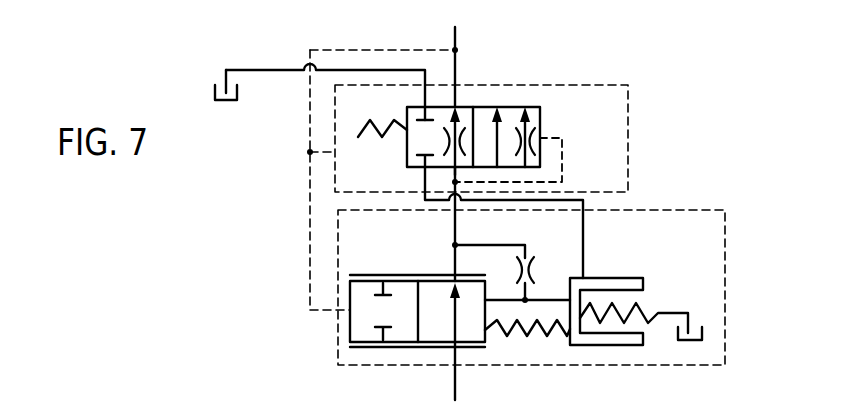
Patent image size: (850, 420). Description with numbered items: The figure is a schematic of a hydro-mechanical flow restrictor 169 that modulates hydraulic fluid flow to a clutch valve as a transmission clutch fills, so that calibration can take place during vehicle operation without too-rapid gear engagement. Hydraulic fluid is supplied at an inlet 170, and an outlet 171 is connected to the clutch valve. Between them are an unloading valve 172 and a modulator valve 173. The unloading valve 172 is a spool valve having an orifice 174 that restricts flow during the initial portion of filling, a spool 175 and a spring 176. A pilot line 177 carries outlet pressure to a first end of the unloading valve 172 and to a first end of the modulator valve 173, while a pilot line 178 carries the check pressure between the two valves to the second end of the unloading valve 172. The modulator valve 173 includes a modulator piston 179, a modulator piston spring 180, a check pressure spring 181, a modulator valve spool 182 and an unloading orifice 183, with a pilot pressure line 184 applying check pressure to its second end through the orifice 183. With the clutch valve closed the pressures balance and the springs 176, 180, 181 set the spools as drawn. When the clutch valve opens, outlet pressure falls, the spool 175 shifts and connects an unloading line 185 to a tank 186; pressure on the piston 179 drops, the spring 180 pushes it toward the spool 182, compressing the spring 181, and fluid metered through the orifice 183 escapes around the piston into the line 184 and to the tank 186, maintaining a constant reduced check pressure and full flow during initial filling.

The flow restrictor 169 is at (296, 279).
The inlet 170 is at (455, 385).
The outlet 171 is at (457, 72).
The unloading valve 172 is at (629, 107).
The modulator valve 173 is at (726, 243).
The orifice 174 is at (538, 136).
The spool 175 is at (506, 107).
The spring 176 is at (393, 118).
The pilot line 177 is at (310, 110).
The pilot line 178 is at (562, 159).
The modulator piston 179 is at (600, 278).
The modulator piston spring 180 is at (650, 310).
The check pressure spring 181 is at (515, 342).
The modulator valve spool 182 is at (350, 322).
The unloading orifice 183 is at (533, 272).
The pilot pressure line 184 is at (462, 245).
The unloading line 185 is at (425, 183).
The tank 186 is at (213, 94).